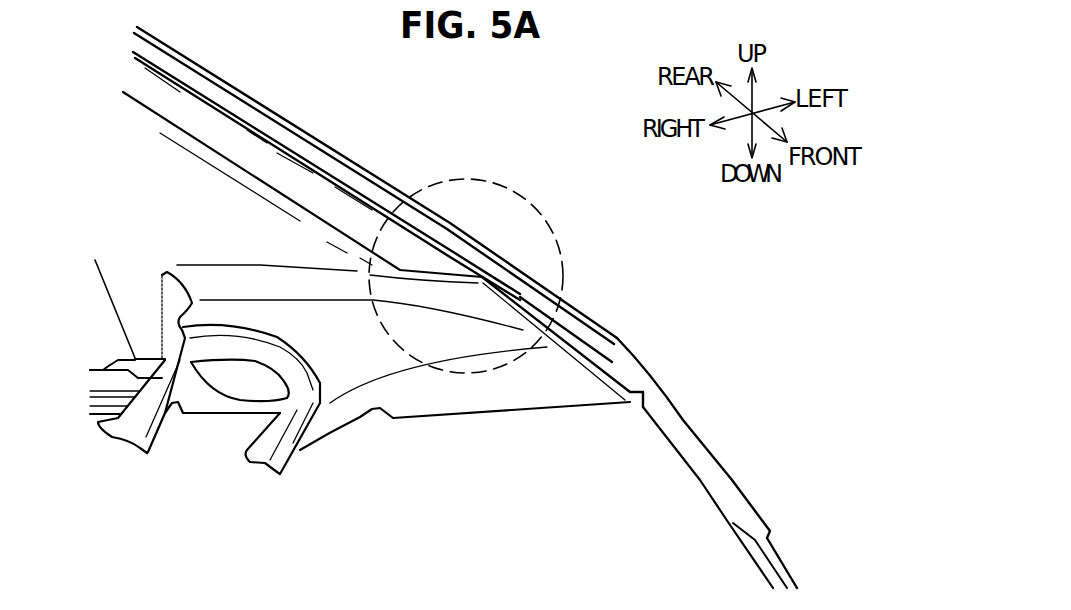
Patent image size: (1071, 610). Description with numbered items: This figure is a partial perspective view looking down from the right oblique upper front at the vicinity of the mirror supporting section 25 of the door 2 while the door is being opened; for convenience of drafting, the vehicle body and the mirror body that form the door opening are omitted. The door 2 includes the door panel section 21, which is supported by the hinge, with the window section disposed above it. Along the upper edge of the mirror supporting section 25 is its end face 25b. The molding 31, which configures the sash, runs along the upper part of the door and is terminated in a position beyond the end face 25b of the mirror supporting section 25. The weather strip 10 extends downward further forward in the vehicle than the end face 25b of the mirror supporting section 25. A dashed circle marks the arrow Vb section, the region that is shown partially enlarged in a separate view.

The door 2 is at (710, 393).
The weather strip 10 is at (367, 182).
The door panel section 21 is at (645, 487).
The mirror supporting section 25 is at (490, 392).
The end face of the mirror supporting section 25b is at (437, 283).
The molding 31 is at (257, 155).
The arrow Vb section Vb is at (535, 198).